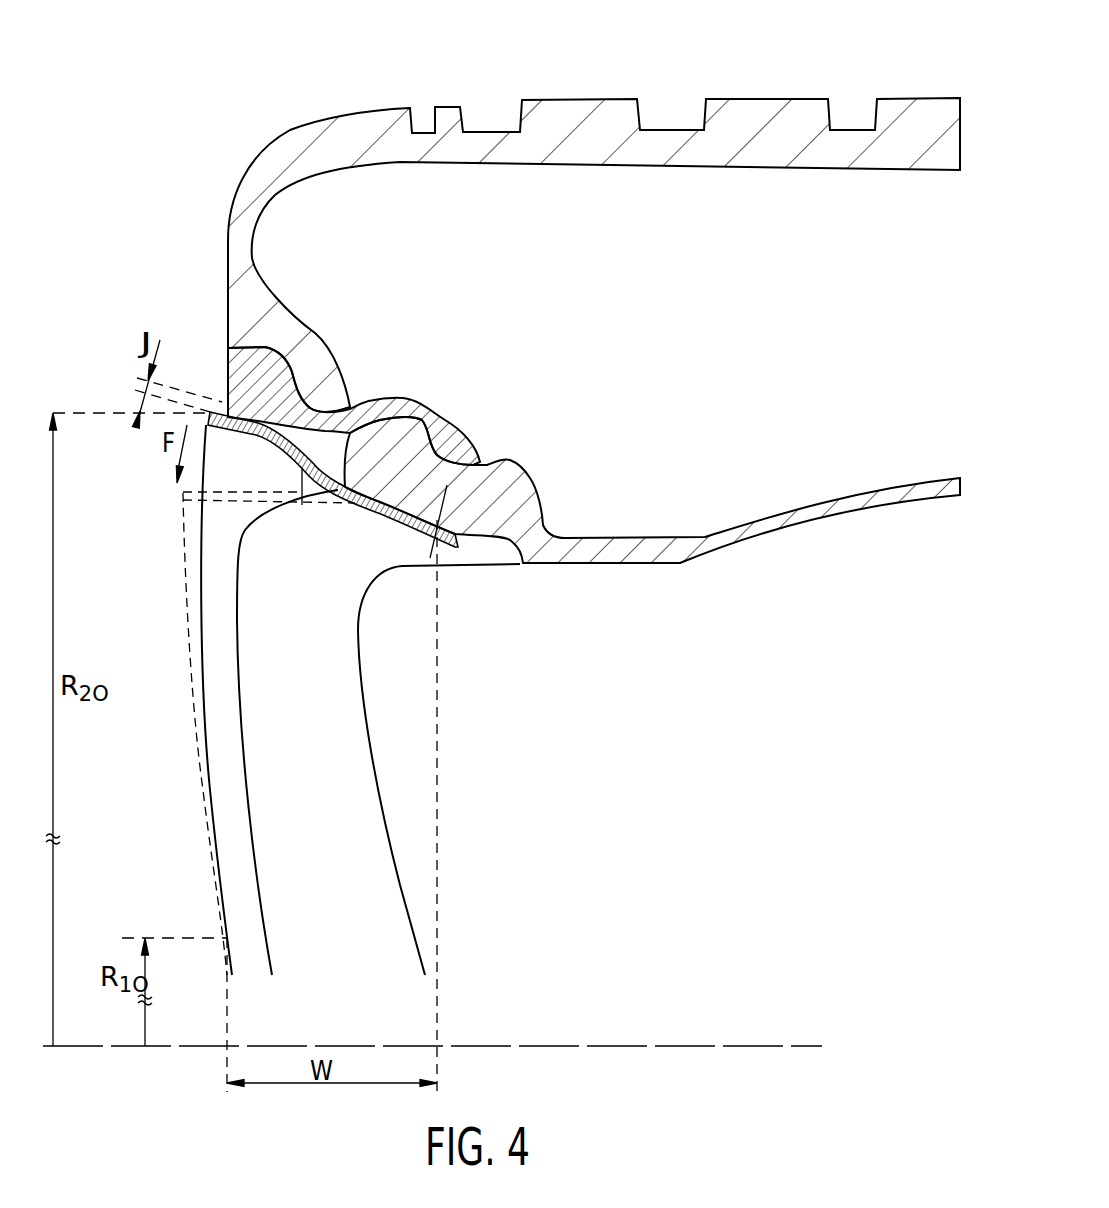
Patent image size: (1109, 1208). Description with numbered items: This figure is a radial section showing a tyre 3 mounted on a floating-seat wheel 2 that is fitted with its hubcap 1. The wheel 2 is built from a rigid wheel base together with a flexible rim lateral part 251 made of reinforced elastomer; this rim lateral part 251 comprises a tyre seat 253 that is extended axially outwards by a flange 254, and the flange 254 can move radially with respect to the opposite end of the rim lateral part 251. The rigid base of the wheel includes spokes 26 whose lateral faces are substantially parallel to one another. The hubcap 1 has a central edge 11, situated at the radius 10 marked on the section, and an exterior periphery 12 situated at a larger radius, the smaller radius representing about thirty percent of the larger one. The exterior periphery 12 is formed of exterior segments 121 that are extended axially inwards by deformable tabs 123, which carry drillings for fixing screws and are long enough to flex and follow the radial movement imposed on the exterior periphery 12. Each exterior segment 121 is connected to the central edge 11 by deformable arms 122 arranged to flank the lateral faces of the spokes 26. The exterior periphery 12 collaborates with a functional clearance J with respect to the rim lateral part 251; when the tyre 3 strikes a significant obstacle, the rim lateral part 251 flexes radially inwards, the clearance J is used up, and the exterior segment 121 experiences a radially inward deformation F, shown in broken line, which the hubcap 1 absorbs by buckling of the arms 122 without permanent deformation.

The hubcap 1 is at (530, 492).
The floating-seat wheel 2 is at (529, 640).
The tyre 3 is at (580, 106).
The rim flange end 10 is at (430, 558).
The central edge 11 is at (195, 884).
The exterior periphery 12 is at (220, 445).
The exterior segments 121 is at (244, 408).
The deformable arm 122 is at (262, 476).
The tabs 123 is at (367, 507).
The spokes 26 is at (336, 797).
The rim lateral part 251 is at (413, 408).
The tyre seat 253 is at (328, 400).
The flange 254 is at (262, 375).